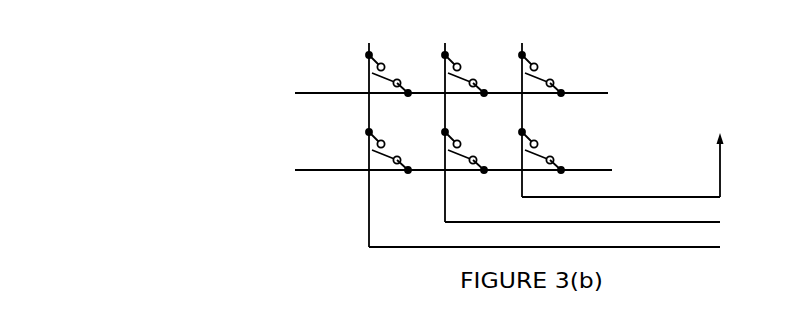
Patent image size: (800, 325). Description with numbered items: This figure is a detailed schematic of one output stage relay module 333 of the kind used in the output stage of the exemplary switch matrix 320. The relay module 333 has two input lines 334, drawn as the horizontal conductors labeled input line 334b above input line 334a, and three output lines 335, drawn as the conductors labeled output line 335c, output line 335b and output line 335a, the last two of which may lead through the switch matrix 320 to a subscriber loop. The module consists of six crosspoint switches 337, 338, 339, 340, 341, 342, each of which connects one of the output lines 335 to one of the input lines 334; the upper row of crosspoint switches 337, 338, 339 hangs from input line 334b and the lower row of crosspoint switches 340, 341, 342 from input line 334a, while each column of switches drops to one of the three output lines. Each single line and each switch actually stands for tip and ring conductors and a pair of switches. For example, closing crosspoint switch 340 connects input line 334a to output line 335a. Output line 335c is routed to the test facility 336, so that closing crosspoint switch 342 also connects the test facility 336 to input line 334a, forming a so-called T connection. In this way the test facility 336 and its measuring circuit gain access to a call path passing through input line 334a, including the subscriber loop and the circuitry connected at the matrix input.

The switch matrix 320 is at (174, 294).
The output stage relay module 333 is at (309, 231).
The input lines 334 is at (283, 87).
The input line 334a is at (453, 159).
The input line 334b is at (451, 82).
The output lines 335 is at (738, 190).
The output line 335a is at (544, 236).
The output line 335b is at (582, 211).
The output line 335c is at (621, 186).
The test facility 336 is at (698, 152).
The crosspoint switch 337 is at (395, 54).
The crosspoint switch 338 is at (470, 61).
The crosspoint switch 339 is at (548, 61).
The crosspoint switch 340 is at (395, 133).
The crosspoint switch 341 is at (470, 133).
The crosspoint switch 342 is at (548, 133).